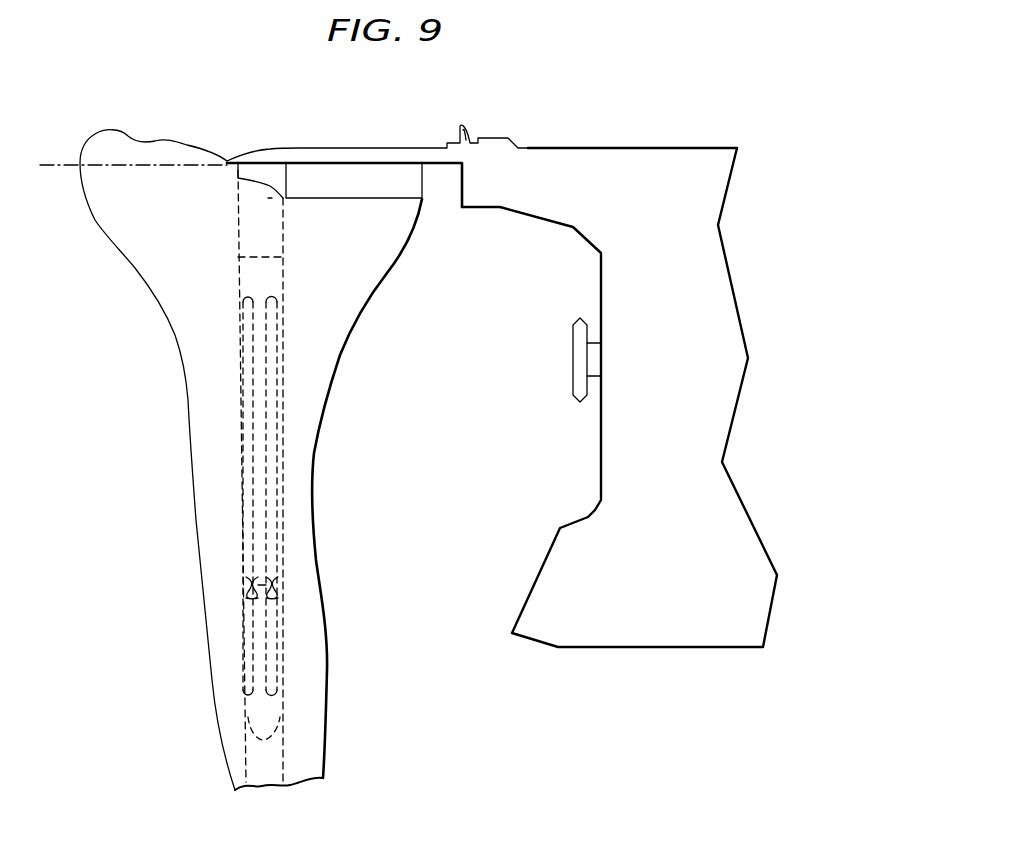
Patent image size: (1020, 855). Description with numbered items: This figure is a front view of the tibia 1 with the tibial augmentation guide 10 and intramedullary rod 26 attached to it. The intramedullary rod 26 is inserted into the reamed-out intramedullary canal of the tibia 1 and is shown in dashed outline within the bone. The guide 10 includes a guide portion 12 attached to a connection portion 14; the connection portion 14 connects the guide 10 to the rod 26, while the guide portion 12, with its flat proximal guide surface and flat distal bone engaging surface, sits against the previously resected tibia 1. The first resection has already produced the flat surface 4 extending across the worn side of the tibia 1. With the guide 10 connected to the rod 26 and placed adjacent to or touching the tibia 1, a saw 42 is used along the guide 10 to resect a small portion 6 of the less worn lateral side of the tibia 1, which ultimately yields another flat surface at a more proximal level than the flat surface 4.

The tibia 1 is at (207, 582).
The flat surface 4 is at (363, 199).
The small portion of lateral side 6 is at (110, 147).
The tibial augmentation guide 10 is at (226, 205).
The guide portion 12 is at (330, 180).
The connection portion 14 is at (257, 245).
The intramedullary rod 26 is at (260, 367).
The saw 42 is at (722, 300).